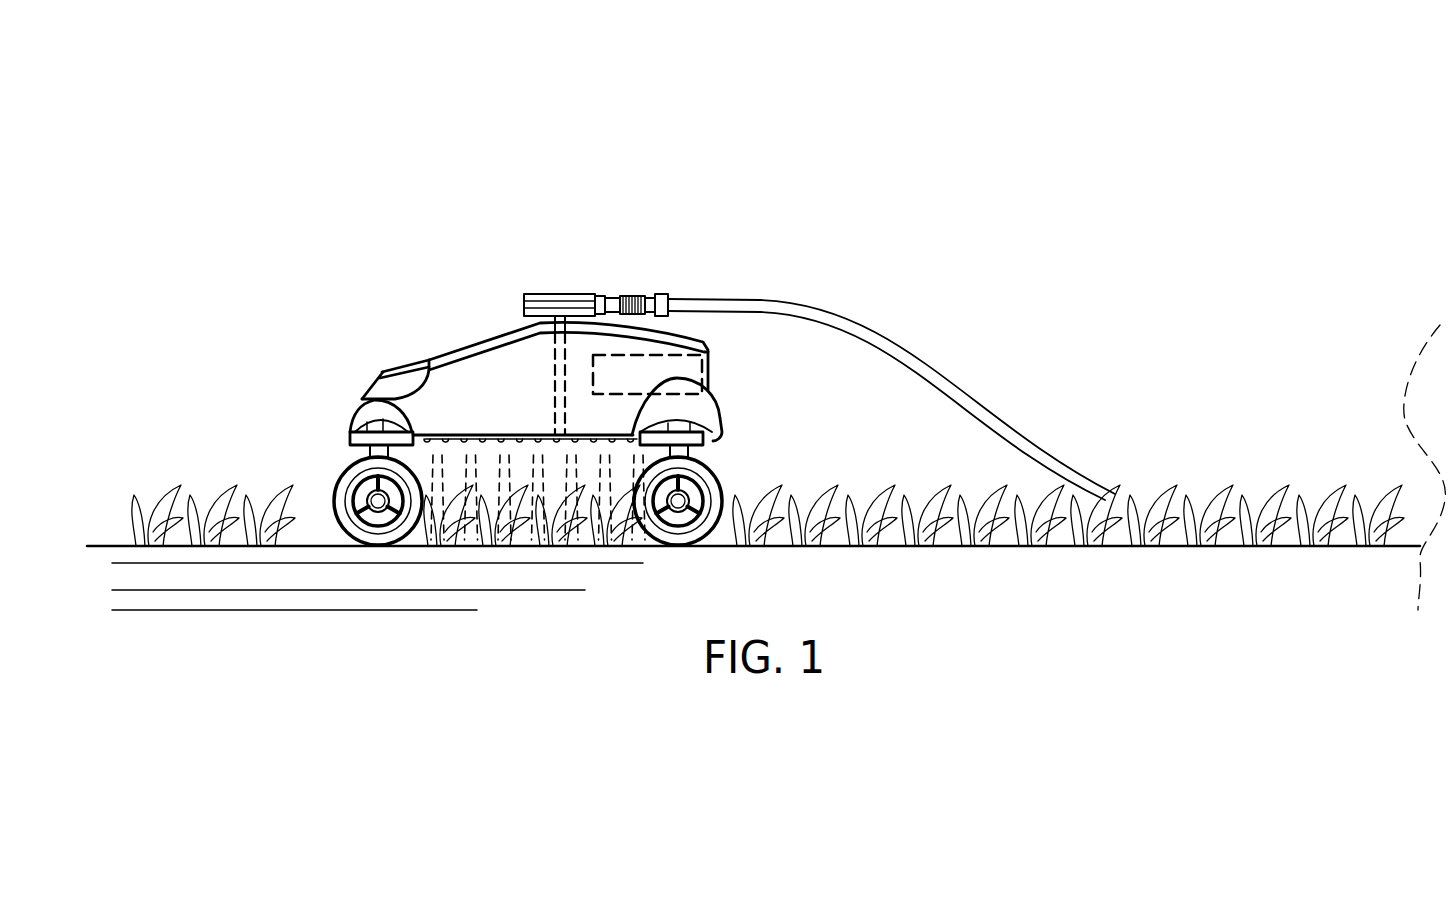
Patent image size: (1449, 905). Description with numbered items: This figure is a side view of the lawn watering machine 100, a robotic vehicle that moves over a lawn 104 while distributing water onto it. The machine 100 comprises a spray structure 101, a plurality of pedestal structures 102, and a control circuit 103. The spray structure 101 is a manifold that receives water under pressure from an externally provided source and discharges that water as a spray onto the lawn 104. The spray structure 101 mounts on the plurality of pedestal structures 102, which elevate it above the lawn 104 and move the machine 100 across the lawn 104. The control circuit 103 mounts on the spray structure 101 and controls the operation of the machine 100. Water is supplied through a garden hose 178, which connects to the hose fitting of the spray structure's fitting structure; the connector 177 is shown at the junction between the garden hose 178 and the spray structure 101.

The lawn watering machine 100 is at (280, 168).
The spray structure 101 is at (455, 238).
The plurality of pedestal structures 102 is at (678, 501).
The control circuit 103 is at (612, 375).
The lawn 104 is at (913, 513).
The hose connector 177 is at (633, 298).
The garden hose 178 is at (814, 310).